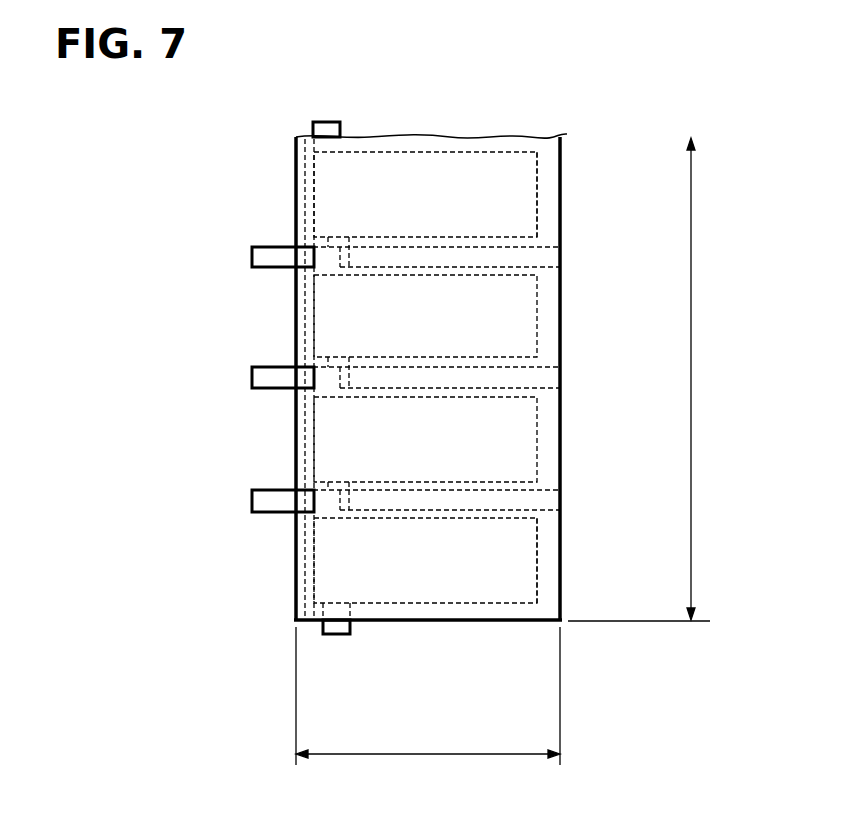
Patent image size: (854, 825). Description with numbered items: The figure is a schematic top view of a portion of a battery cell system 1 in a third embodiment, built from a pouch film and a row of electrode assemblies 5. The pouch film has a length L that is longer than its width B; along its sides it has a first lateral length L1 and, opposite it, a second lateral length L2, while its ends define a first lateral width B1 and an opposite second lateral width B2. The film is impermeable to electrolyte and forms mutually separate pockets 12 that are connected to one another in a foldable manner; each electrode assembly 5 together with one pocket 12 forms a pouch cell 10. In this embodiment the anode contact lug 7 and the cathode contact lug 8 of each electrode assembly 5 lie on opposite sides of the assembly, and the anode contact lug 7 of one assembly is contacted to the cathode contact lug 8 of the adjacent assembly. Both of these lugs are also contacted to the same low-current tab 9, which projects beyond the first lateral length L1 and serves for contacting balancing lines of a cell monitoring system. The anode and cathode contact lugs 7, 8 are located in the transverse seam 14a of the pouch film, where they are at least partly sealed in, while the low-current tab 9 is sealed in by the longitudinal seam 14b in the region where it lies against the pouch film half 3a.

The battery cell system 1 is at (615, 113).
The pouch film half 3a is at (545, 215).
The electrode assembly 5 is at (515, 290).
The anode contact lug 7 is at (330, 326).
The cathode contact lug 8 is at (332, 122).
The low-current tab 9 is at (262, 255).
The pouch cell 10 is at (295, 442).
The pocket 12 is at (533, 195).
The transverse seam 14a is at (550, 380).
The longitudinal seam 14b is at (297, 160).
The width B is at (428, 707).
The first lateral width B1 is at (450, 137).
The second lateral width B2 is at (392, 622).
The length L is at (640, 379).
The first lateral length L1 is at (295, 210).
The second lateral length L2 is at (560, 423).